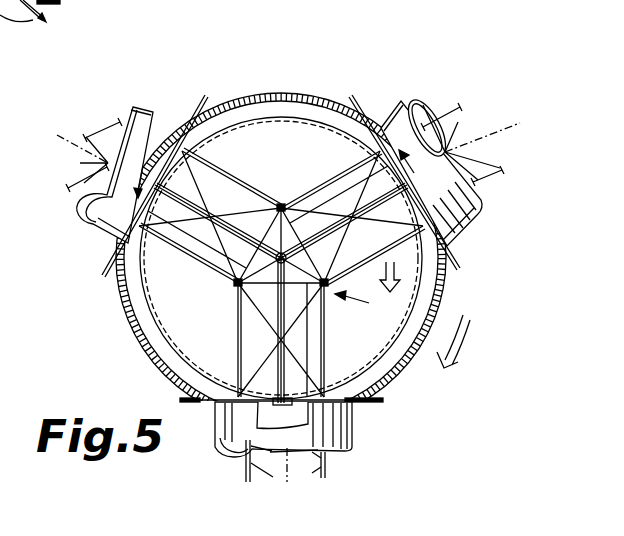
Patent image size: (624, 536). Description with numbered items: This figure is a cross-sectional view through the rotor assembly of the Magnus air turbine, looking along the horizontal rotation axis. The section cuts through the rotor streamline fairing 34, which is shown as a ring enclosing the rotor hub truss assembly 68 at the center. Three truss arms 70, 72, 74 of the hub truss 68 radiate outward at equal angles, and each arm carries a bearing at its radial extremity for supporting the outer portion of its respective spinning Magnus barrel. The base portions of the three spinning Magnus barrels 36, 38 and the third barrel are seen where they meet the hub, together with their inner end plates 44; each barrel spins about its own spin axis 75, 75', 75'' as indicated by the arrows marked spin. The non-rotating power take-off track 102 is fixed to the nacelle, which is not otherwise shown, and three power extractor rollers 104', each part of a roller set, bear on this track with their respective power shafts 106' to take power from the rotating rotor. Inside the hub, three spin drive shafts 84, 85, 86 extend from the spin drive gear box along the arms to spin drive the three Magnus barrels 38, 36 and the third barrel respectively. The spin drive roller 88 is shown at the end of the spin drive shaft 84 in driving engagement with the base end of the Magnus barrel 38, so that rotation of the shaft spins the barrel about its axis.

The rotor streamline fairing 34 is at (266, 92).
The Magnus barrel 36 is at (390, 108).
The Magnus barrel 38 is at (358, 432).
The inner end plates 44 is at (200, 96).
The hub truss 68 is at (402, 315).
The truss arm 70 is at (435, 110).
The truss arm 72 is at (328, 478).
The truss arm 74 is at (109, 175).
The spin axis 75 is at (187, 241).
The spin axis 75' is at (82, 127).
The spin axis 75'' is at (482, 117).
The spin drive shaft 84 is at (320, 328).
The spin drive shaft 85 is at (330, 210).
The spin drive shaft 86 is at (196, 230).
The spin drive roller 88 is at (352, 419).
The power take-off track 102 is at (232, 128).
The power extractor rollers 104' is at (339, 277).
The power shafts 106' is at (289, 271).